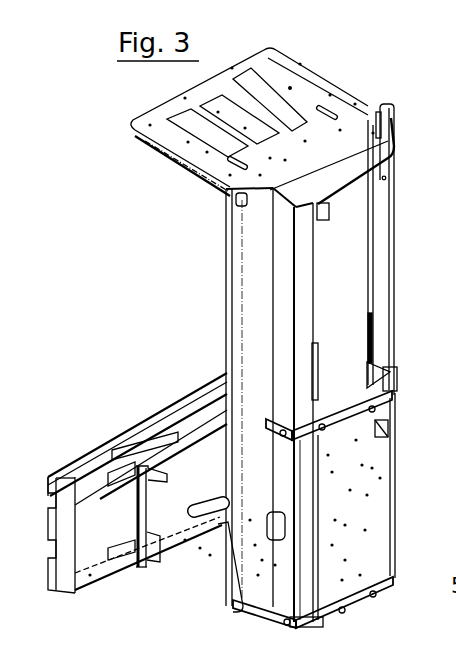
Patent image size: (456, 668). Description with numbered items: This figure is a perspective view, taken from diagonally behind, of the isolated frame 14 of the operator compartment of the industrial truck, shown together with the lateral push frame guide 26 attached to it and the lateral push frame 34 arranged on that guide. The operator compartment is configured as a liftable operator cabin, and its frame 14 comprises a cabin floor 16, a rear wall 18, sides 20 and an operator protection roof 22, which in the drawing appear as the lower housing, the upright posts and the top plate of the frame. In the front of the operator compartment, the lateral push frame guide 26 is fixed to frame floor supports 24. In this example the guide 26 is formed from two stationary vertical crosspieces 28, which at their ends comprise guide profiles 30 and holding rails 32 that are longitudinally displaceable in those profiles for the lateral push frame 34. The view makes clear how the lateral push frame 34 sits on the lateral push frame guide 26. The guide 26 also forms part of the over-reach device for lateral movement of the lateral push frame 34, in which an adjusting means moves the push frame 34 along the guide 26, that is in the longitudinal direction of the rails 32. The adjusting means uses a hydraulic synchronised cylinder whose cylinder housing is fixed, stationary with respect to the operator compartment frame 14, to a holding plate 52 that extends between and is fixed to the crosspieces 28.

The frame 14 is at (377, 325).
The cabin floor 16 is at (187, 532).
The rear wall 18 is at (367, 470).
The sides 20 is at (243, 255).
The operator protection roof 22 is at (157, 157).
The frame floor supports 24 is at (211, 573).
The lateral push frame guide 26 is at (155, 438).
The vertical crosspieces 28 is at (187, 463).
The guide profiles 30 is at (134, 488).
The holding rails 32 is at (87, 492).
The lateral push frame 34 is at (92, 455).
The holding plate 52 is at (207, 462).